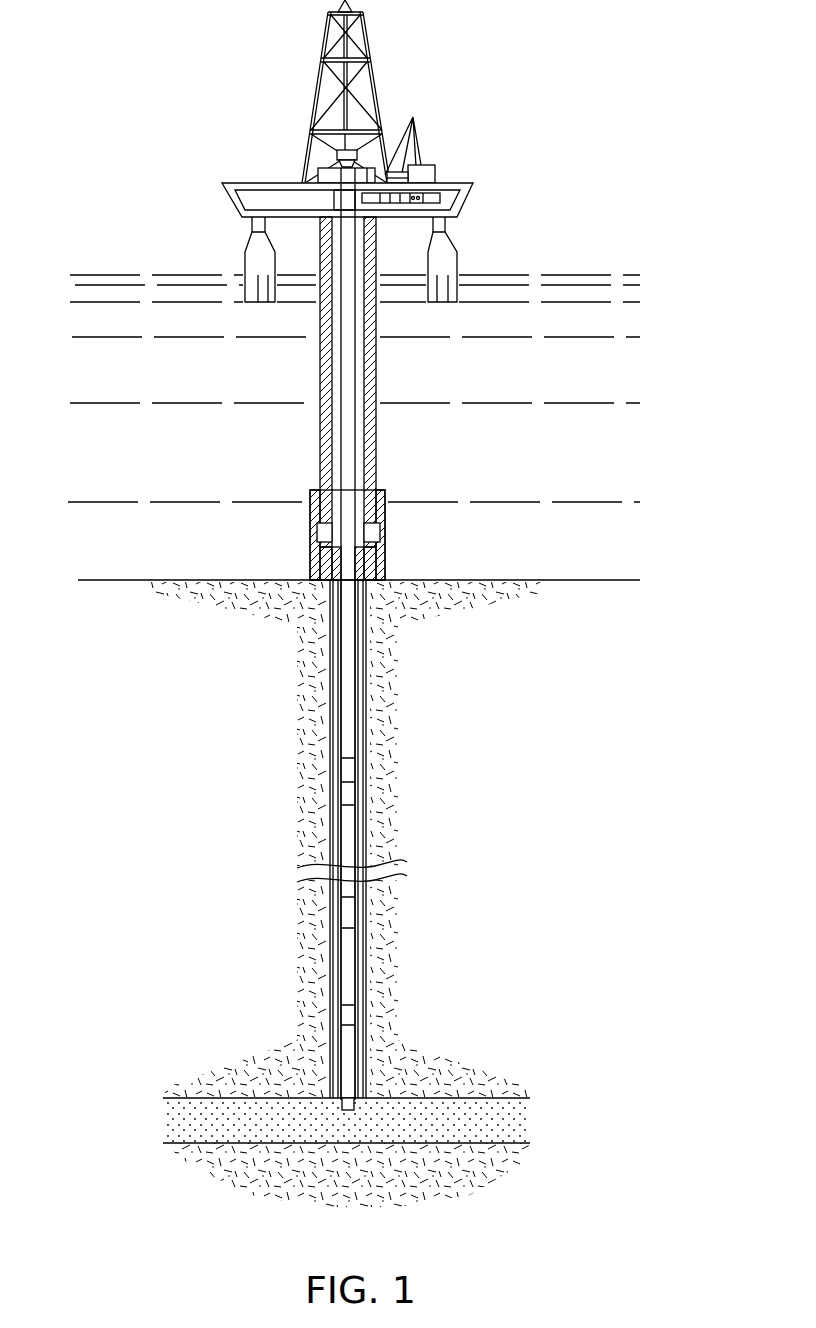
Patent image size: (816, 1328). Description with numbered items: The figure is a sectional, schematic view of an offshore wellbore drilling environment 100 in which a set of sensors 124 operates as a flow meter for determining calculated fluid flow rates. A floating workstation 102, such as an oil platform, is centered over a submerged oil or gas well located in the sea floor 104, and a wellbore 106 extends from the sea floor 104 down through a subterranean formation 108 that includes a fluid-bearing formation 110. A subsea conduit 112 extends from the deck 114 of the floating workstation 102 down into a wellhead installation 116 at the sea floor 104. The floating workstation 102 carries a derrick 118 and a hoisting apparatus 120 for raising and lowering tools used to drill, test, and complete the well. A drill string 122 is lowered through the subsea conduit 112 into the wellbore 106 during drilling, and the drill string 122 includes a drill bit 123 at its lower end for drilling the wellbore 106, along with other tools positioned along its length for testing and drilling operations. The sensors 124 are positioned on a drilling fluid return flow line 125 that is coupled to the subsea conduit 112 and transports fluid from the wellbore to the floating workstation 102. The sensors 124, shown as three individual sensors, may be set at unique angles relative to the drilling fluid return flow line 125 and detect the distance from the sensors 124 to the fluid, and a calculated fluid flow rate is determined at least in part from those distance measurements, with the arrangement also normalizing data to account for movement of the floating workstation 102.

The offshore wellbore drilling environment 100 is at (552, 108).
The floating workstation 102 is at (446, 266).
The sea floor 104 is at (492, 580).
The wellbore 106 is at (366, 764).
The subterranean formation 108 is at (378, 978).
The fluid-bearing formation 110 is at (510, 1105).
The subsea conduit 112 is at (316, 445).
The deck 114 is at (233, 183).
The wellhead installation 116 is at (317, 500).
The derrick 118 is at (365, 37).
The hoisting apparatus 120 is at (338, 163).
The drill string 122 is at (352, 457).
The drill bit 123 is at (343, 1108).
The set of sensors 124 is at (413, 118).
The drilling fluid return flow line 125 is at (440, 198).